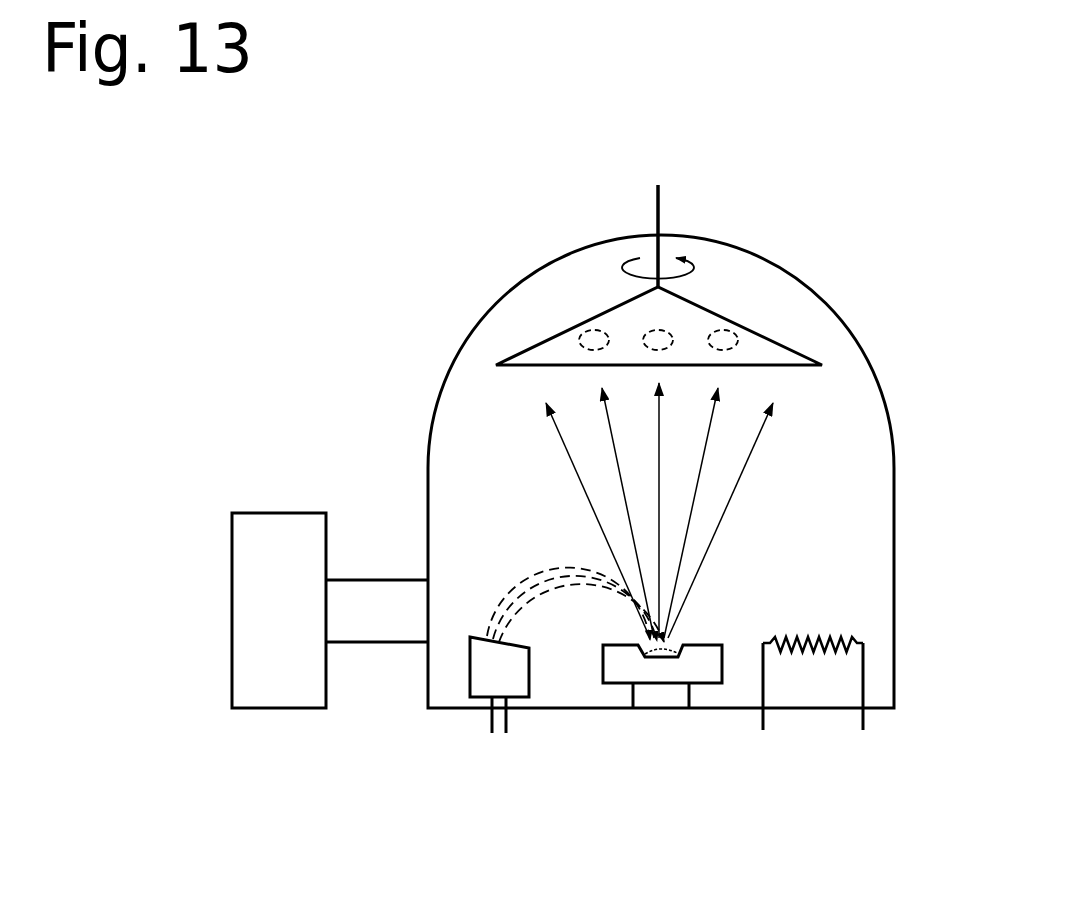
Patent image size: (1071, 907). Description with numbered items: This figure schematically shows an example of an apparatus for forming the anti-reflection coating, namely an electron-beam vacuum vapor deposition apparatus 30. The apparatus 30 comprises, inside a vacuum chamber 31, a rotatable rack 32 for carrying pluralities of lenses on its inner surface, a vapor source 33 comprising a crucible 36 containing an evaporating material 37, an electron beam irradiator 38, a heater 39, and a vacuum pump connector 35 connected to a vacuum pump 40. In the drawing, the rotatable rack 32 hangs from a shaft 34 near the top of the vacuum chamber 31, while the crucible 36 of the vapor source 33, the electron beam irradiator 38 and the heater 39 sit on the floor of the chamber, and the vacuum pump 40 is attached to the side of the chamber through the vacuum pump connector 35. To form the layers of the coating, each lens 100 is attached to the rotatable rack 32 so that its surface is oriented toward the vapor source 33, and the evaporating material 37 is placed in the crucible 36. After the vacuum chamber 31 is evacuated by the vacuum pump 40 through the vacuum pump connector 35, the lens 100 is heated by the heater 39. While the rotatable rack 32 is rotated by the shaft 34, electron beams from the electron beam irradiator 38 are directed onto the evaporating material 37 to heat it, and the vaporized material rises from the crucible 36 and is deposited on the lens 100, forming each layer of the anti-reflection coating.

The vacuum vapor deposition apparatus 30 is at (382, 220).
The vacuum chamber 31 is at (438, 376).
The rotatable rack 32 is at (777, 355).
The vapor source 33 is at (596, 680).
The shaft 34 is at (655, 212).
The vacuum pump connector 35 is at (427, 643).
The crucible 36 is at (705, 675).
The evaporating material 37 is at (681, 642).
The electron beam irradiator 38 is at (469, 684).
The heater 39 is at (866, 687).
The vacuum pump 40 is at (265, 513).
The lens 100 is at (720, 330).